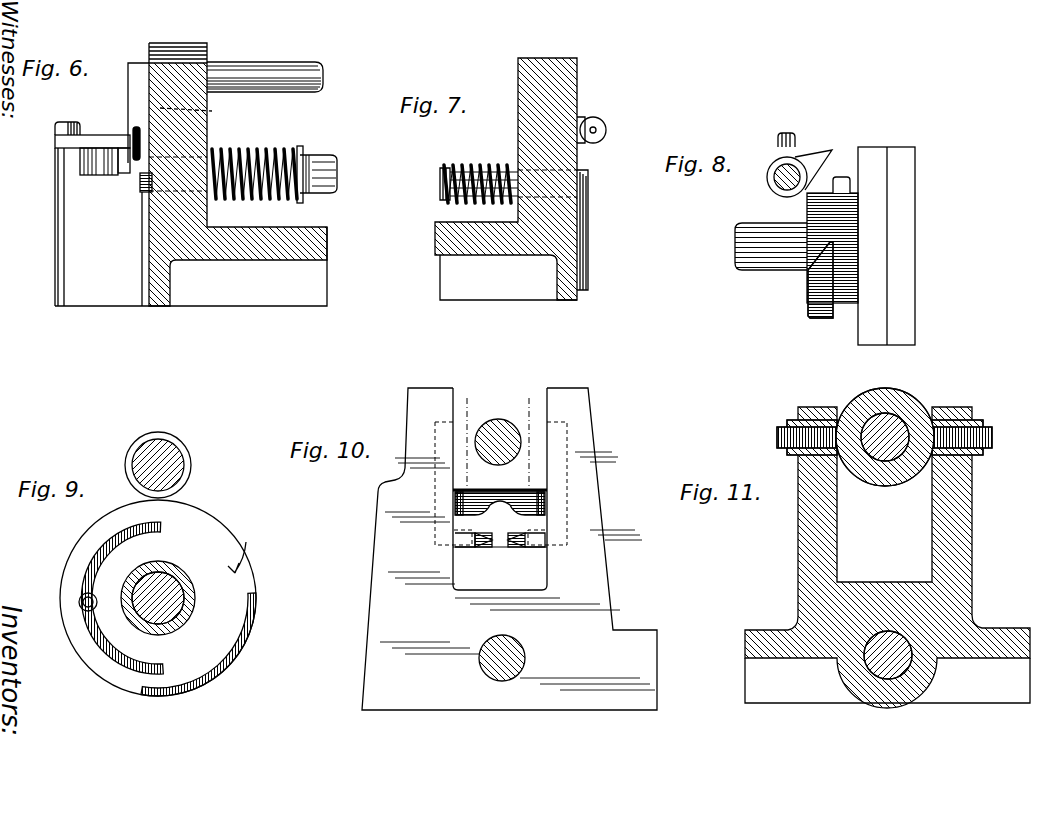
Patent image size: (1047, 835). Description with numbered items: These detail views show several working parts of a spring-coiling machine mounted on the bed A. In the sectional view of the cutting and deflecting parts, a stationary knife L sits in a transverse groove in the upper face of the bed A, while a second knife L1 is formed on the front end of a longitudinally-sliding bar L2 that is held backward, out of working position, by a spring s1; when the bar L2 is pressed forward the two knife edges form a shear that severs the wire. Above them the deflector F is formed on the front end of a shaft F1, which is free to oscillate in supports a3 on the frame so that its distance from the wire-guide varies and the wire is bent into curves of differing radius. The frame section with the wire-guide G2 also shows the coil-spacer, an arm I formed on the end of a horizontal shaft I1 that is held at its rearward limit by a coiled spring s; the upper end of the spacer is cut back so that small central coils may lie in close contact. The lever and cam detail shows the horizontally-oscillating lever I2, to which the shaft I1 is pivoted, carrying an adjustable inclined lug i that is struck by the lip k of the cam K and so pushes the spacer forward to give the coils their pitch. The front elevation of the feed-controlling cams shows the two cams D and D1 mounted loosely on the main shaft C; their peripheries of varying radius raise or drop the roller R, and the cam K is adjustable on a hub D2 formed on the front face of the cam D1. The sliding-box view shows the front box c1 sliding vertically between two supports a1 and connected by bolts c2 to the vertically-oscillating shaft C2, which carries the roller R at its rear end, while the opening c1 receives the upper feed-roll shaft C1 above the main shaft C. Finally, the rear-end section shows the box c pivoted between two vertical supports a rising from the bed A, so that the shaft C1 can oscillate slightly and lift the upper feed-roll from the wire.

In FIG. 6, the bed A is at (322, 249).
In FIG. 7, the bed A is at (440, 237).
In FIG. 10, the bed A is at (509, 549).
In FIG. 11, the bed A is at (887, 557).
In FIG. 11, the vertical supports a is at (807, 522).
In FIG. 10, the supports a1 is at (382, 475).
In FIG. 6, the supports a3 is at (200, 110).
In FIG. 8, the main shaft C is at (738, 252).
In FIG. 9, the main shaft C is at (168, 597).
In FIG. 10, the main shaft C is at (525, 655).
In FIG. 11, the main shaft C is at (885, 665).
In FIG. 10, the upper feed-roll shaft C1 is at (522, 443).
In FIG. 11, the upper feed-roll shaft C1 is at (910, 400).
In FIG. 11, the rear box c is at (887, 395).
In FIG. 10, the front box c1 is at (492, 400).
In FIG. 9, the vertically-oscillating shaft C2 is at (178, 452).
In FIG. 10, the vertically-oscillating shaft C2 is at (460, 507).
In FIG. 10, the bolts c2 is at (545, 503).
In FIG. 9, the cam D is at (163, 598).
In FIG. 9, the cam D1 is at (175, 592).
In FIG. 9, the hub D2 is at (173, 627).
In FIG. 9, the roller R is at (186, 463).
In FIG. 6, the deflector F is at (128, 107).
In FIG. 6, the shaft F1 is at (306, 51).
In FIG. 6, the stationary knife L is at (123, 177).
In FIG. 6, the knife L1 is at (145, 194).
In FIG. 6, the longitudinally-sliding bar L2 is at (337, 174).
In FIG. 7, the coiled spring s is at (472, 162).
In FIG. 6, the spring s1 is at (284, 198).
In FIG. 7, the spacer arm I is at (588, 252).
In FIG. 7, the horizontal shaft I1 is at (440, 183).
In FIG. 8, the horizontally-oscillating lever I2 is at (773, 181).
In FIG. 8, the inclined lug i is at (812, 185).
In FIG. 7, the wire-guide G2 is at (606, 130).
In FIG. 8, the cam K is at (813, 303).
In FIG. 8, the lip k is at (860, 254).